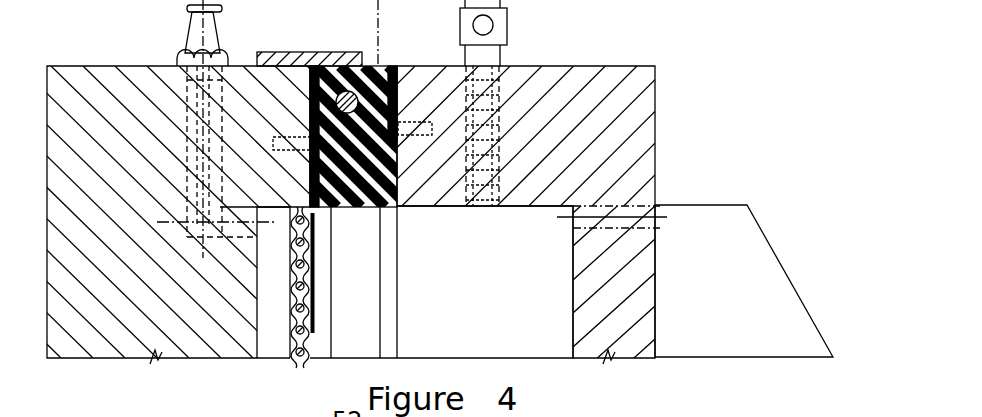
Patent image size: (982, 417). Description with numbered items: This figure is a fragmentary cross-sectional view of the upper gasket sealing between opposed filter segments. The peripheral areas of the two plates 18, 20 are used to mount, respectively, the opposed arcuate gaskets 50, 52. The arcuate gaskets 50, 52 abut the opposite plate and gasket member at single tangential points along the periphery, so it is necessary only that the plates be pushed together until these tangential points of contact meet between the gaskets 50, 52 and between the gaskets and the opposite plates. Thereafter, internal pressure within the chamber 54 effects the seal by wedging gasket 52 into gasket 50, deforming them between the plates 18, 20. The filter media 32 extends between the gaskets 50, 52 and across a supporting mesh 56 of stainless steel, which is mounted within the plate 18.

The plate 18 is at (103, 72).
The plate 20 is at (622, 67).
The arcuate gasket 50 is at (336, 66).
The arcuate gasket 52 is at (347, 208).
The filter media 32 is at (316, 262).
The chamber 54 is at (500, 283).
The supporting mesh 56 is at (314, 302).